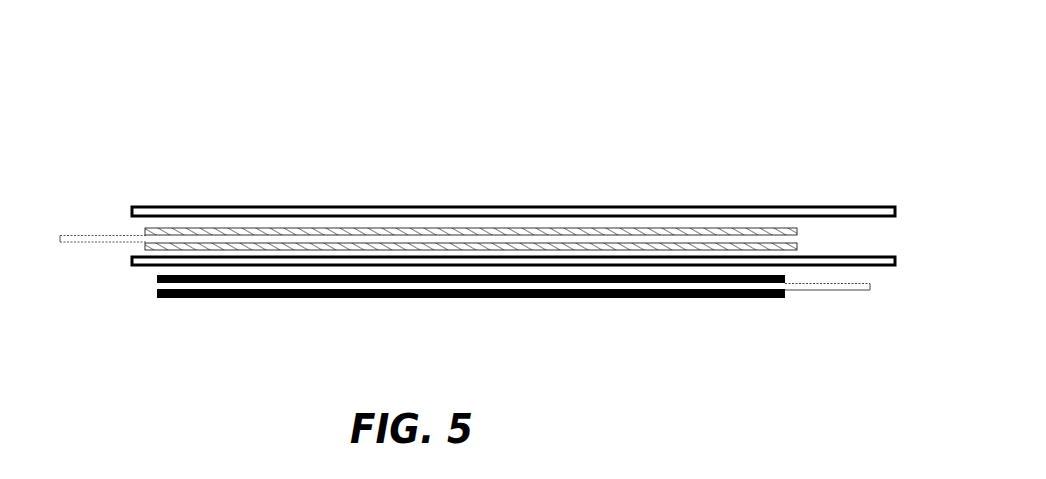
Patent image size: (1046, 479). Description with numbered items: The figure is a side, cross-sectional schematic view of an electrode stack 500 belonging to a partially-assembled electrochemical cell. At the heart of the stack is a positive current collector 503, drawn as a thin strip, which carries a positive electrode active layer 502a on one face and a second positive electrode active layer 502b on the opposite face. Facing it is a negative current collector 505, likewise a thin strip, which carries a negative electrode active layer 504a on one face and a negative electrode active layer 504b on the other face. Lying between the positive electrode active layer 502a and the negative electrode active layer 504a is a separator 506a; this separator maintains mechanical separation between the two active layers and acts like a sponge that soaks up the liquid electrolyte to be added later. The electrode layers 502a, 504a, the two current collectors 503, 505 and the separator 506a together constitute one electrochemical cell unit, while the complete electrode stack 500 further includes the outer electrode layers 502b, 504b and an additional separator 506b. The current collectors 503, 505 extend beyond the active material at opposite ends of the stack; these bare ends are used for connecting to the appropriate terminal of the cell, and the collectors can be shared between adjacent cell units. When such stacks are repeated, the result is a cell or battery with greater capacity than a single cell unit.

The electrode stack 500 is at (525, 123).
The positive electrode active layer 502a is at (732, 281).
The positive electrode active layer 502b is at (635, 298).
The positive current collector 503 is at (828, 289).
The negative electrode active layer 504a is at (198, 247).
The negative electrode active layer 504b is at (298, 228).
The negative current collector 505 is at (93, 233).
The separator 506a is at (896, 256).
The additional separator 506b is at (793, 210).